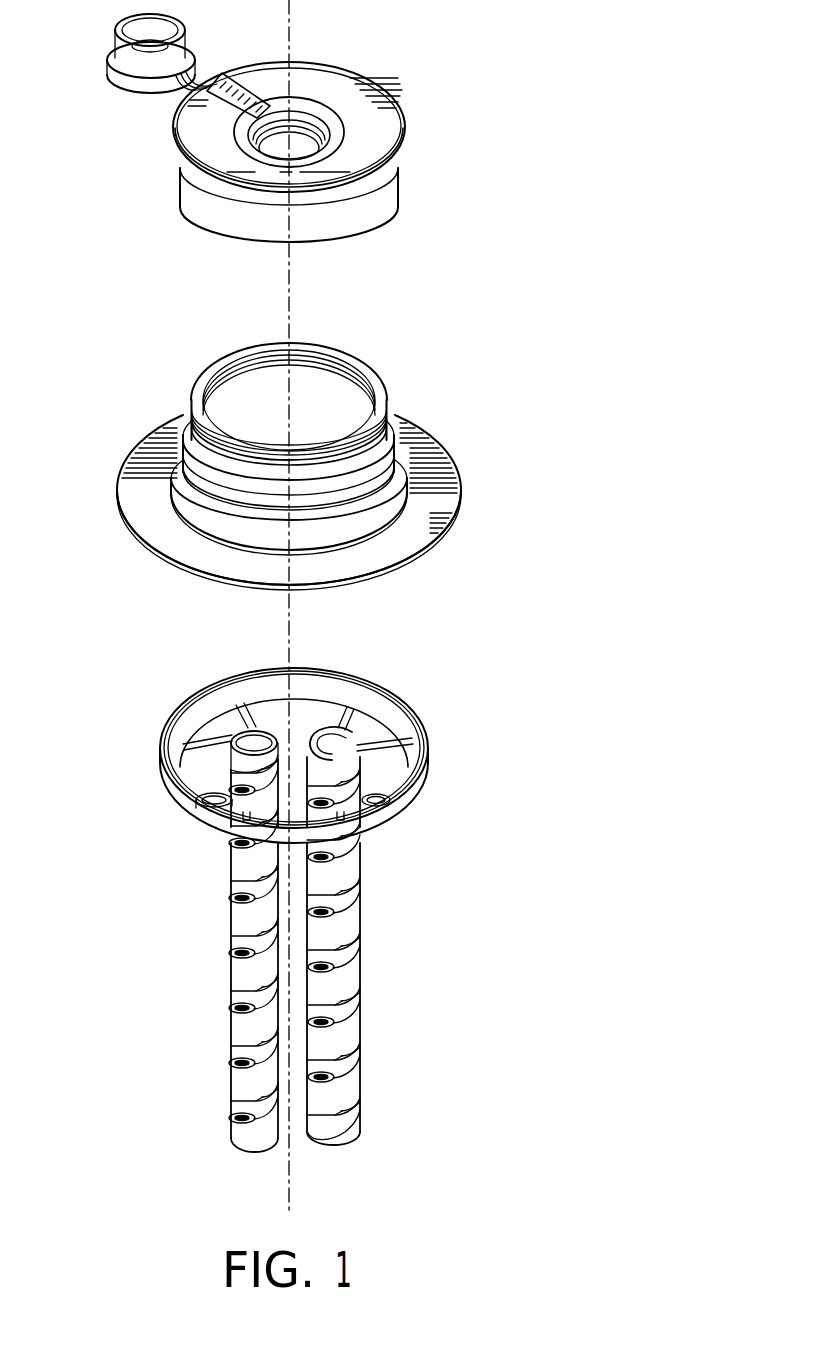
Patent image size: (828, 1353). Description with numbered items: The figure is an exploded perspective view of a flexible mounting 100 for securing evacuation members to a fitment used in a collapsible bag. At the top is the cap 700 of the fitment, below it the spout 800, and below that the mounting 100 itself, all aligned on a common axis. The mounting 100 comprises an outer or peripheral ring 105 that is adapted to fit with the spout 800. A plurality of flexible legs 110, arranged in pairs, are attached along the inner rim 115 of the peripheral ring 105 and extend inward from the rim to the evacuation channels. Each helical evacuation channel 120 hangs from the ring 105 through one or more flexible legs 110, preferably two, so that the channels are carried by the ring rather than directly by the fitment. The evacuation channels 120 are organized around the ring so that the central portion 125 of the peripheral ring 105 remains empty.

The cap 700 is at (434, 109).
The spout 800 is at (482, 467).
The flexible mounting 100 is at (309, 874).
The peripheral ring 105 is at (388, 688).
The flexible legs 110 is at (215, 830).
The inner rim 115 is at (325, 700).
The evacuation channel 120 is at (353, 953).
The central portion 125 is at (273, 717).